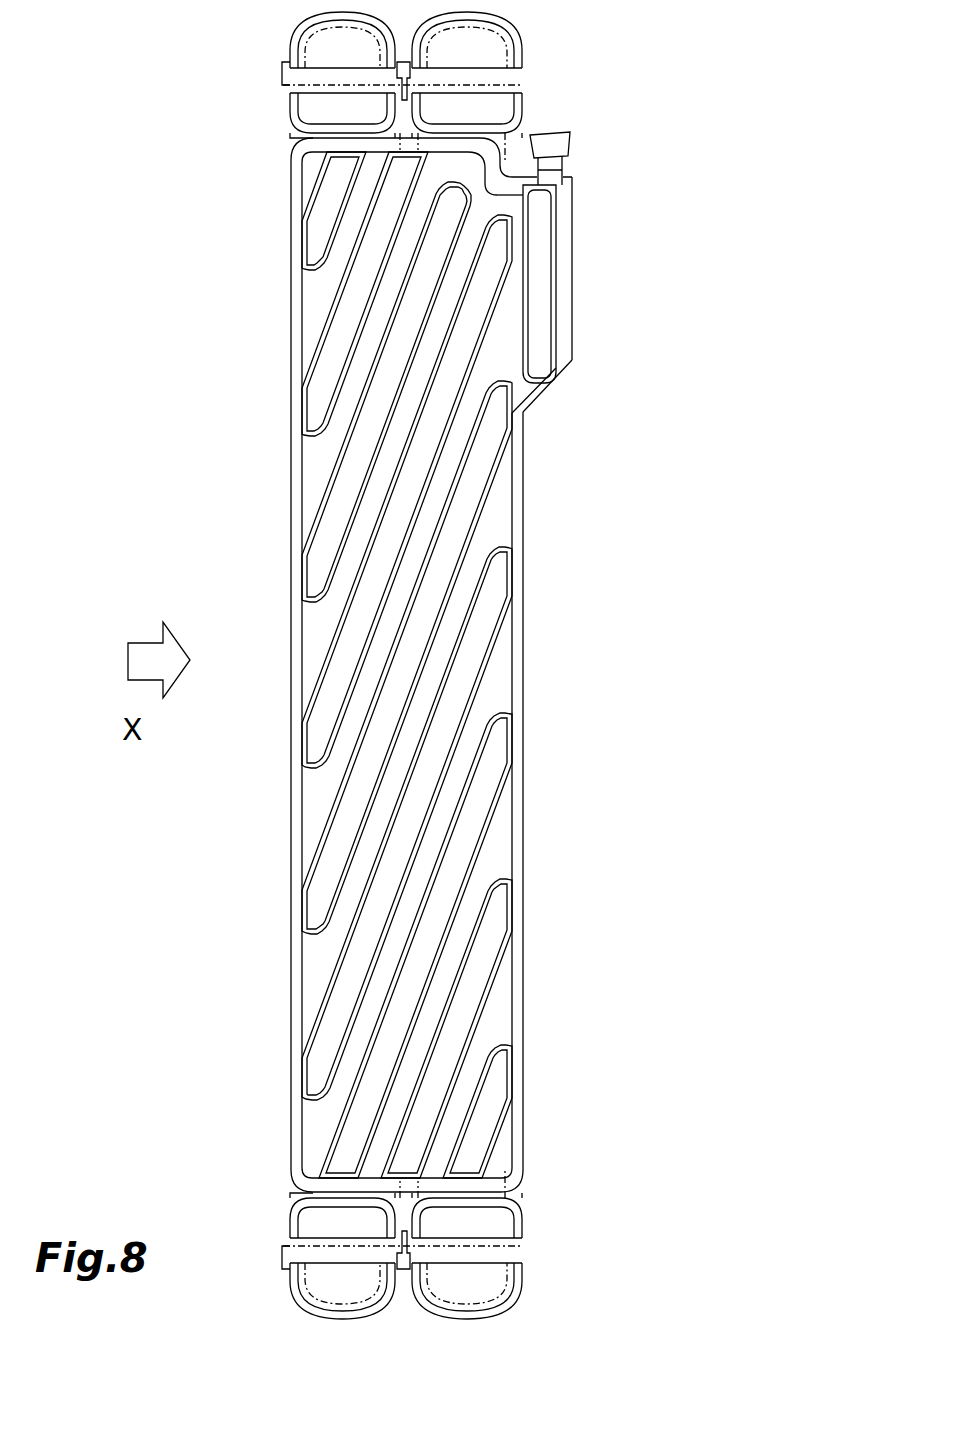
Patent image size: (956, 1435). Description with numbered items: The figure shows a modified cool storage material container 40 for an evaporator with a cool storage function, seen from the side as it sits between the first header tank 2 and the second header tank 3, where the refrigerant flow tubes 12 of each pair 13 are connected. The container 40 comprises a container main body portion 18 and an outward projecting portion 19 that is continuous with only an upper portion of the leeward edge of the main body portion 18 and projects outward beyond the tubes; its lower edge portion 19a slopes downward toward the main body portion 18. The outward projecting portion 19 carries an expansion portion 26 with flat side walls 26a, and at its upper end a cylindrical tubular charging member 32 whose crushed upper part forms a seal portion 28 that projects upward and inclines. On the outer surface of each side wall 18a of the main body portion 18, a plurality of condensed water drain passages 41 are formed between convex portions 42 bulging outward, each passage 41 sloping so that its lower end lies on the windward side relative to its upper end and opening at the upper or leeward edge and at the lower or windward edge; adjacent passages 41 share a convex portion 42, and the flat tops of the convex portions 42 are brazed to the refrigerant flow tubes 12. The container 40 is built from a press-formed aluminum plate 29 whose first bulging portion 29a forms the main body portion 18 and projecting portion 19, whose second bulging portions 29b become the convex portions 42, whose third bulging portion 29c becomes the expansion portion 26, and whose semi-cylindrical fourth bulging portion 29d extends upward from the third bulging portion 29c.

The first header tank 2 is at (285, 78).
The second header tank 3 is at (285, 1258).
The refrigerant flow tube 12 is at (285, 1190).
The pair of refrigerant flow tubes 13 is at (290, 140).
The container main body portion 18 is at (318, 1022).
The side wall of container main body portion 18a is at (322, 820).
The outward projecting portion 19 is at (565, 371).
The lower edge portion of outward projecting portion 19a is at (530, 395).
The expansion portion 26 is at (547, 232).
The side wall of expansion portion 26a is at (547, 312).
The seal portion 28 is at (556, 136).
The aluminum plate 29 is at (520, 1088).
The first bulging portion 29a is at (322, 1126).
The second bulging portion 29b is at (372, 918).
The third bulging portion 29c is at (556, 255).
The fourth bulging portion 29d is at (553, 186).
The charging member 32 is at (565, 150).
The cool storage material container 40 is at (615, 540).
The condensed water drain passage 41 is at (398, 575).
The convex portion 42 is at (378, 383).